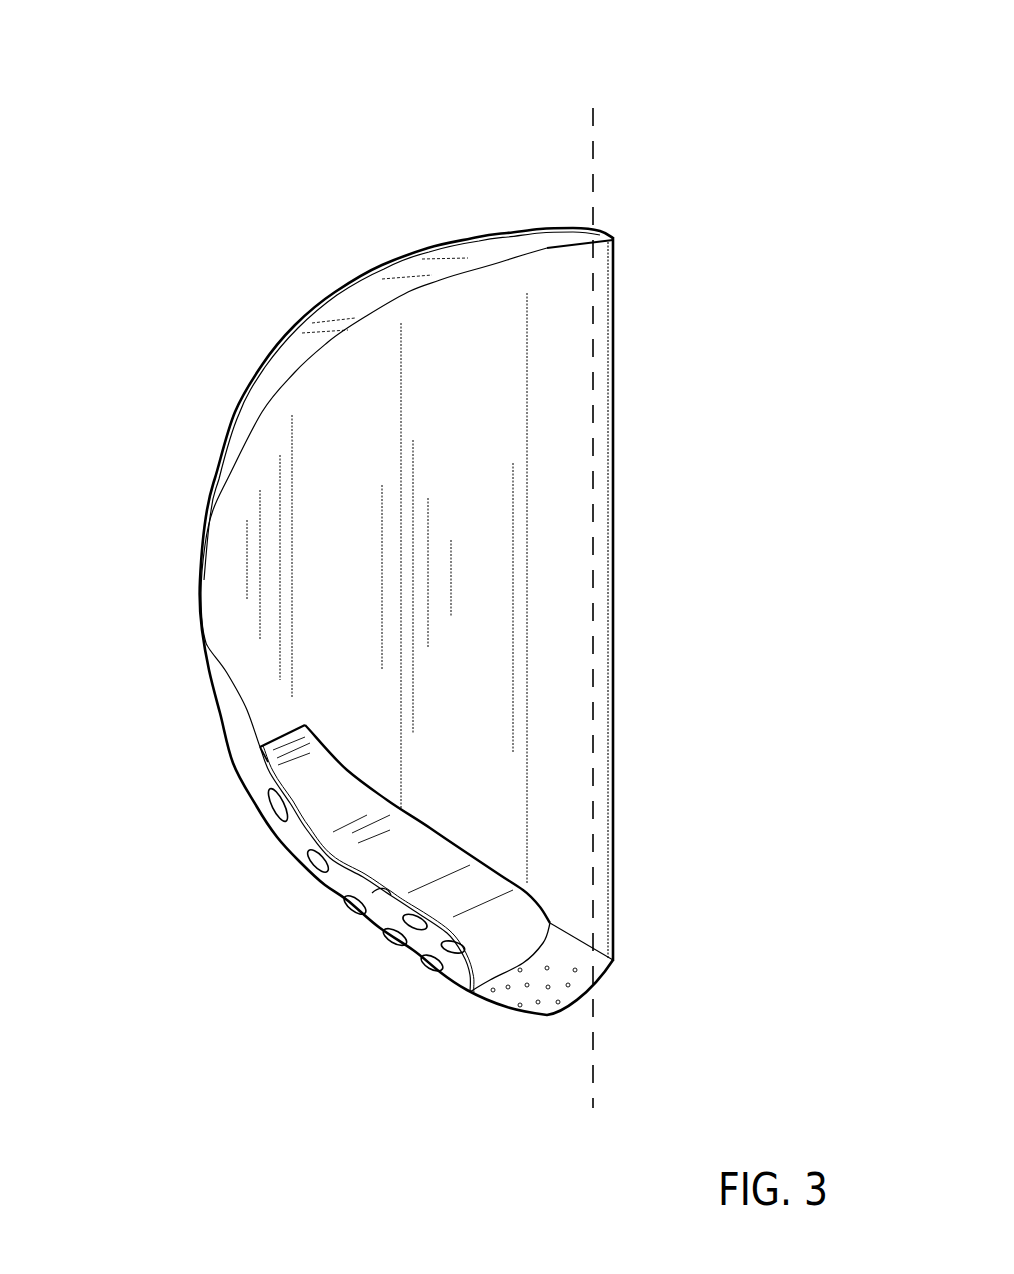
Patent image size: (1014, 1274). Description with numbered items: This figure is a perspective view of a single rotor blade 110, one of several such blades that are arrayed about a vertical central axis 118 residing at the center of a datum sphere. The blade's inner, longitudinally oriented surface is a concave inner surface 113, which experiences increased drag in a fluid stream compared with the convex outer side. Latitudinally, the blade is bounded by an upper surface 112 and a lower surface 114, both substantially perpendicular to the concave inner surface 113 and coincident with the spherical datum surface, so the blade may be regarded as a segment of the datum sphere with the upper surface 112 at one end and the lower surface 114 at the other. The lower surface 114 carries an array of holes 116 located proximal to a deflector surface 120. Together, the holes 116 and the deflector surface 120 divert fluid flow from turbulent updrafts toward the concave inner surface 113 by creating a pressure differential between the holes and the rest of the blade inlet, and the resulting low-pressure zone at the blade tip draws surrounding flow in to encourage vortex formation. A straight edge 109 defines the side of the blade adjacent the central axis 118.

The rotor blade 110 is at (102, 43).
The upper surface 112 is at (348, 308).
The concave inner surface 113 is at (353, 457).
The cut plane edge 109 is at (615, 562).
The lower surface 114 is at (242, 733).
The deflector surface 120 is at (318, 790).
The holes 116 is at (351, 908).
The central axis 118 is at (593, 1072).